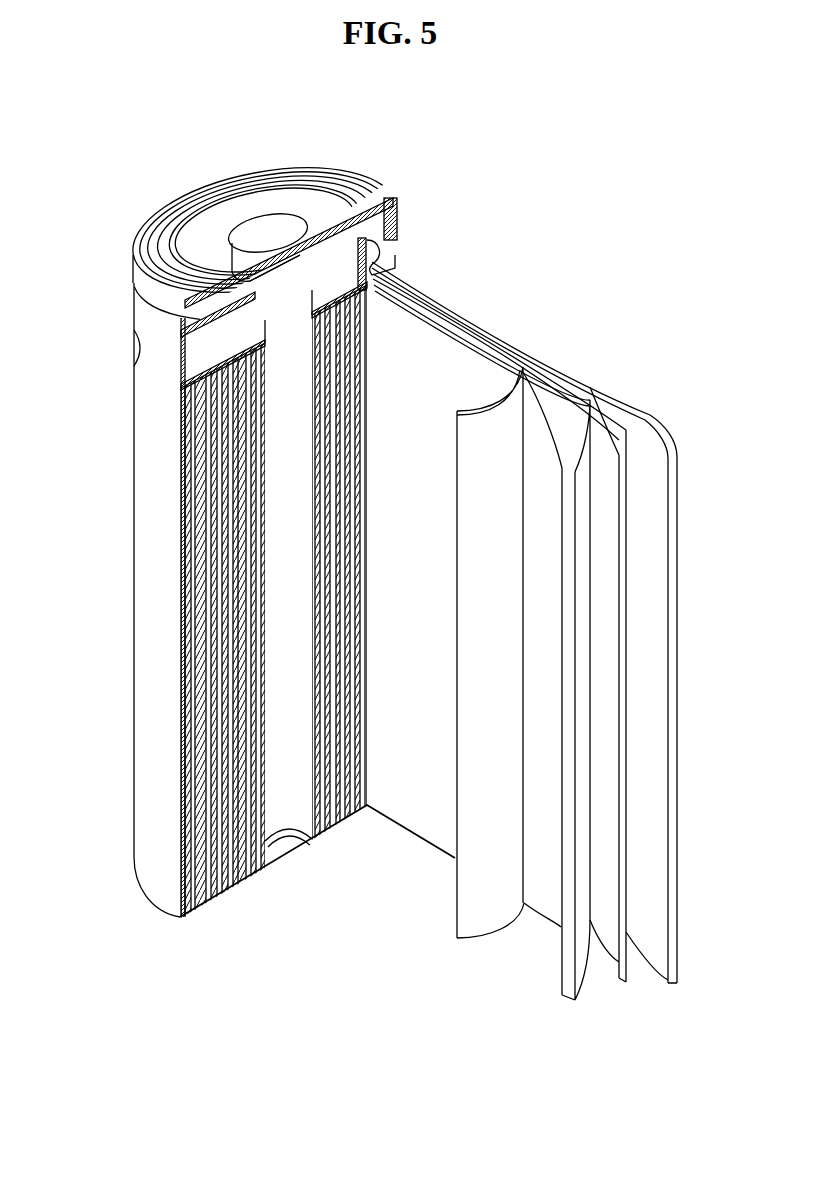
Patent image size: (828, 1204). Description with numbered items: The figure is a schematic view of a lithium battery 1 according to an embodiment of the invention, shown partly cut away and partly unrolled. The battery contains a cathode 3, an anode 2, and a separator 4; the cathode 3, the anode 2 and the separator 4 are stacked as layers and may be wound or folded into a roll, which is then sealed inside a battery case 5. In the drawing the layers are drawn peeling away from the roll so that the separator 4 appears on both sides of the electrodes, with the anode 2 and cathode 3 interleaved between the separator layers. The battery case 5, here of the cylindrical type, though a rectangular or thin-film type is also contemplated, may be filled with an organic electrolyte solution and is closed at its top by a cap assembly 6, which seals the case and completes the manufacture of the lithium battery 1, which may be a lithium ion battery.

The lithium battery 1 is at (548, 184).
The anode 2 is at (652, 423).
The cathode 3 is at (577, 420).
The separator 4 is at (492, 413).
The battery case 5 is at (142, 590).
The cap assembly 6 is at (258, 215).